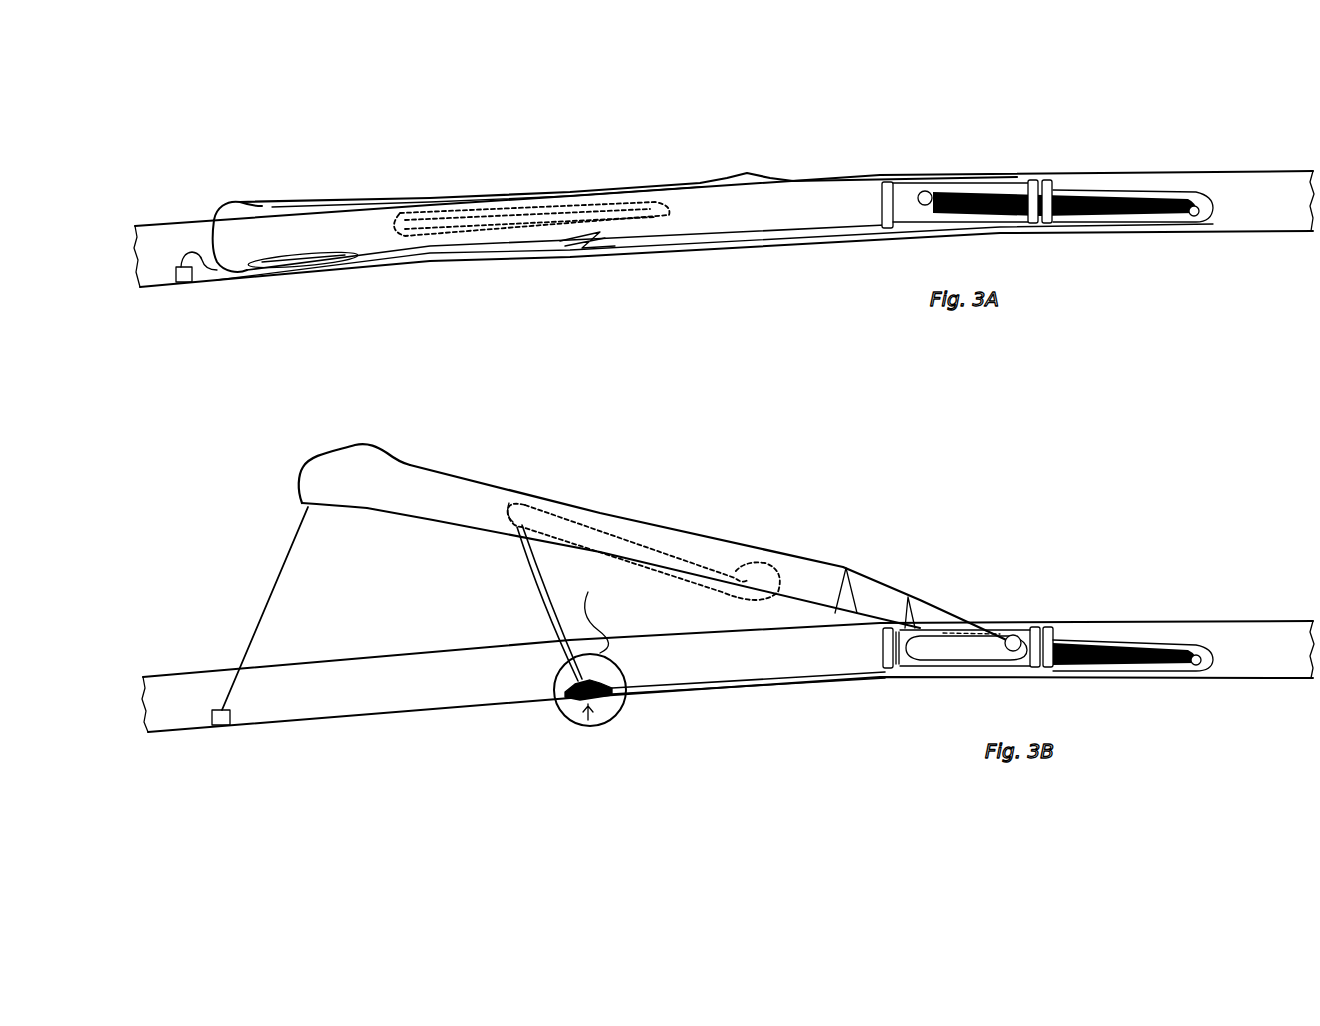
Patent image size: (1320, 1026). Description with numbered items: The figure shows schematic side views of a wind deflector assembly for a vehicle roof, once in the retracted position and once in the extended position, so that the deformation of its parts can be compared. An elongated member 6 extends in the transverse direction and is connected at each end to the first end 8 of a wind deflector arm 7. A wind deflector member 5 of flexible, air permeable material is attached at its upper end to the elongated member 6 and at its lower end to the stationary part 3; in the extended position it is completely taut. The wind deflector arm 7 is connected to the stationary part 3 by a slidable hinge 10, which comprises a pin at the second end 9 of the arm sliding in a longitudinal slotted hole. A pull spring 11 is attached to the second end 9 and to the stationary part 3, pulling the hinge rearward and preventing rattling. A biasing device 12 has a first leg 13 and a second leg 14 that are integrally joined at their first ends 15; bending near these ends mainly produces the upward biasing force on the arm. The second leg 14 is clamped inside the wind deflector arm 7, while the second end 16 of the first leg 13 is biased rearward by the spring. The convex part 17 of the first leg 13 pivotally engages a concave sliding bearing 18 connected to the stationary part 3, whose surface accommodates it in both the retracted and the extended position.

In FIG. 3A, the stationary part 3 is at (1252, 233).
In FIG. 3B, the stationary part 3 is at (278, 722).
In FIG. 3A, the wind deflector member 5 is at (220, 276).
In FIG. 3B, the wind deflector member 5 is at (262, 622).
In FIG. 3A, the elongated member 6 is at (237, 172).
In FIG. 3B, the elongated member 6 is at (341, 420).
In FIG. 3A, the wind deflector arm 7 is at (693, 173).
In FIG. 3B, the wind deflector arm 7 is at (727, 540).
In FIG. 3A, the first end of wind deflector arm 8 is at (325, 200).
In FIG. 3B, the first end of wind deflector arm 8 is at (405, 478).
In FIG. 3A, the second end of wind deflector arm 9 is at (867, 195).
In FIG. 3B, the second end of wind deflector arm 9 is at (952, 617).
In FIG. 3A, the slidable hinge 10 is at (1020, 190).
In FIG. 3B, the slidable hinge 10 is at (975, 645).
In FIG. 3A, the pull spring 11 is at (1140, 193).
In FIG. 3B, the pull spring 11 is at (1142, 643).
In FIG. 3A, the biasing device 12 is at (492, 245).
In FIG. 3B, the biasing device 12 is at (636, 606).
In FIG. 3B, the first leg 13 is at (555, 612).
In FIG. 3B, the second leg 14 is at (605, 543).
In FIG. 3B, the first ends of the first and second legs 15 is at (530, 503).
In FIG. 3B, the second end of first leg 16 is at (556, 705).
In FIG. 3B, the convex part 17 is at (613, 700).
In FIG. 3B, the concave sliding bearing 18 is at (597, 727).